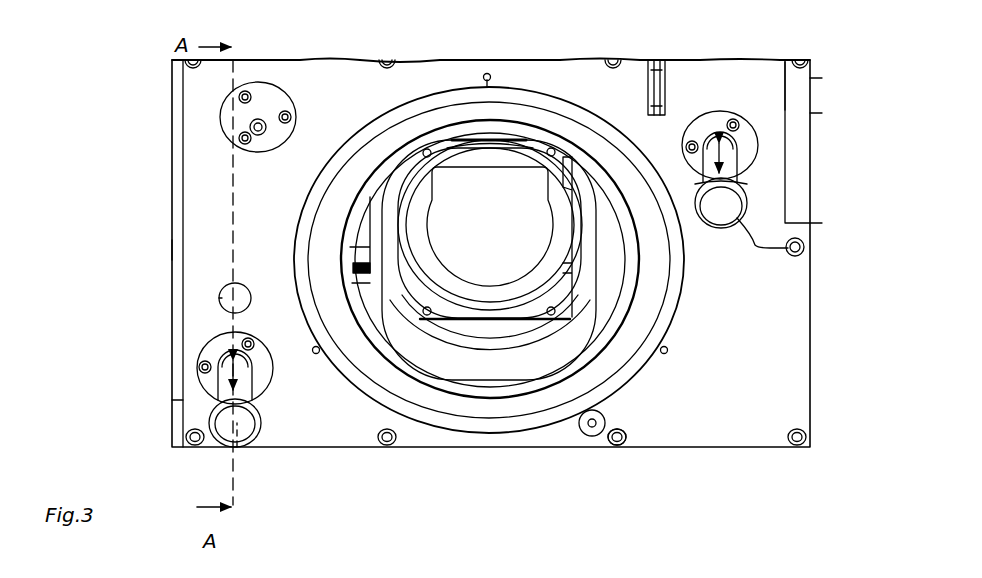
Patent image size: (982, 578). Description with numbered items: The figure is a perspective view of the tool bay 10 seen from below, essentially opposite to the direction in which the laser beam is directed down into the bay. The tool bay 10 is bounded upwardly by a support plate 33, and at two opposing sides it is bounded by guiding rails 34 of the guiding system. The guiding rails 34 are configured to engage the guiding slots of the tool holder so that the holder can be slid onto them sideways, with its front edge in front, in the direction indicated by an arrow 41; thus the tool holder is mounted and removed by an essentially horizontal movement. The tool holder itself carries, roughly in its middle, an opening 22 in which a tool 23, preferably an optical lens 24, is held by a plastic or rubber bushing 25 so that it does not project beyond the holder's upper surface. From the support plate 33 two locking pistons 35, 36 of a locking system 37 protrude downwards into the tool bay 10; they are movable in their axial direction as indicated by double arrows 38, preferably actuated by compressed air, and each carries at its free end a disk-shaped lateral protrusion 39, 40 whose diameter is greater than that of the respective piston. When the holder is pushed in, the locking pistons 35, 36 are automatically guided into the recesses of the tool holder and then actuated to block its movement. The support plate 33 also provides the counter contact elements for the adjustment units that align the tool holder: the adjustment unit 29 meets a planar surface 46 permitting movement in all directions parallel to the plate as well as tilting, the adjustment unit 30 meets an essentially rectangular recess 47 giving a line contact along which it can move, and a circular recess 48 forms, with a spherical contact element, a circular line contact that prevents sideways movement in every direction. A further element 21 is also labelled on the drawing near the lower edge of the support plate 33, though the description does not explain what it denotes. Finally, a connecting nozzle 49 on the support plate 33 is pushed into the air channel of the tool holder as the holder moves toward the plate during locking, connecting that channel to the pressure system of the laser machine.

The tool bay 10 is at (205, 250).
The fastening screw 21 is at (606, 441).
The opening 22 is at (640, 280).
The tool 23 is at (490, 265).
The optical lens 24 is at (490, 146).
The bushing 25 is at (437, 352).
The adjustment unit 29 is at (215, 298).
The adjustment unit 30 is at (682, 84).
The support plate 33 is at (793, 322).
The guiding rails 34 is at (170, 400).
The locking piston 35 is at (240, 426).
The locking piston 36 is at (783, 149).
The locking system 37 is at (272, 408).
The double arrows 38 is at (246, 372).
The lateral protrusion 39 is at (220, 445).
The lateral protrusion 40 is at (805, 247).
The arrow 41 is at (490, 8).
The planar surface 46 is at (222, 308).
The rectangular recess 47 is at (672, 88).
The circular recess 48 is at (591, 436).
The connecting nozzle 49 is at (262, 122).